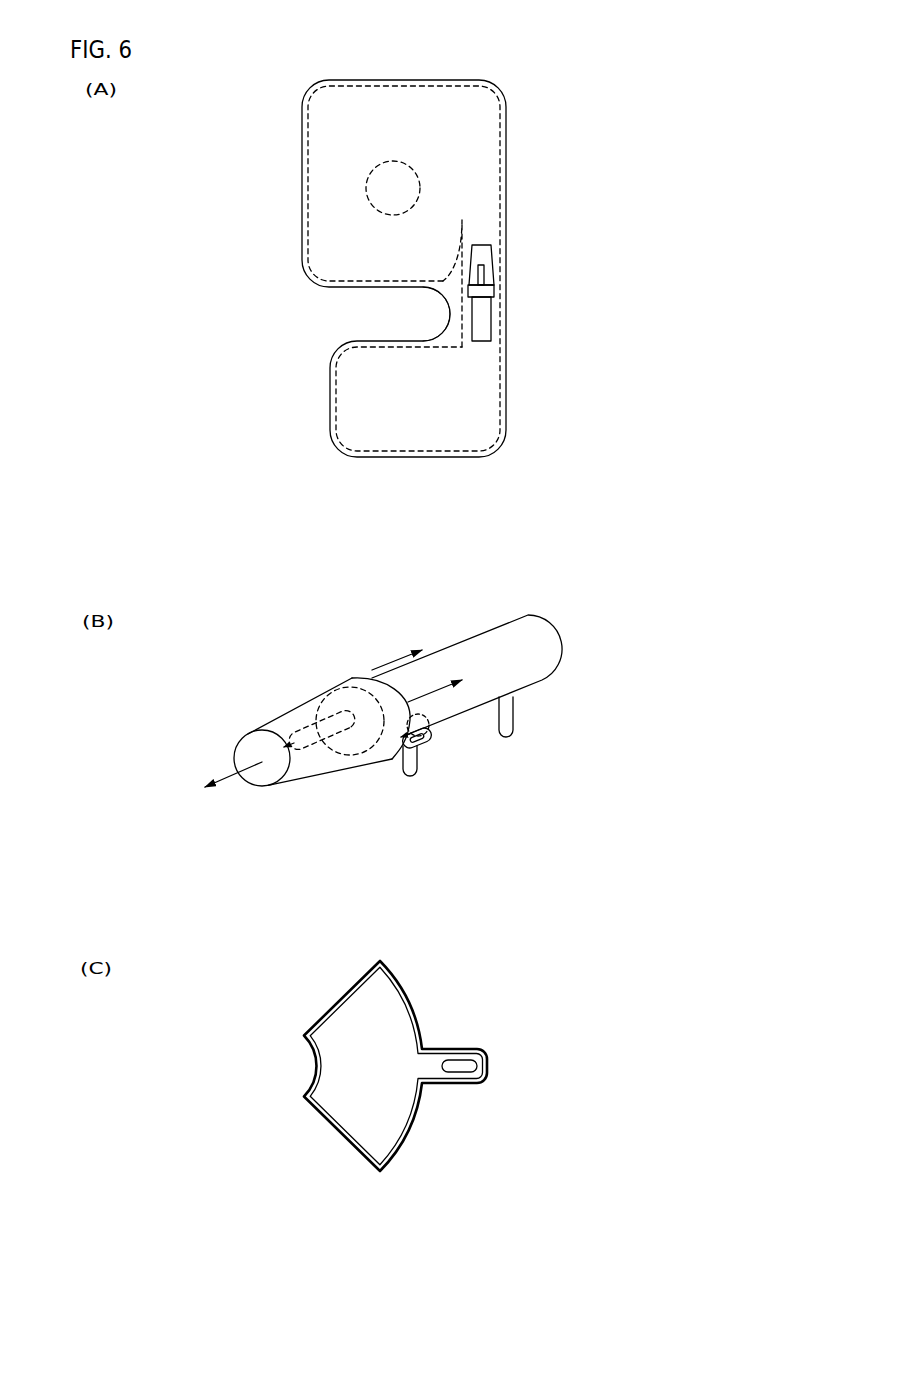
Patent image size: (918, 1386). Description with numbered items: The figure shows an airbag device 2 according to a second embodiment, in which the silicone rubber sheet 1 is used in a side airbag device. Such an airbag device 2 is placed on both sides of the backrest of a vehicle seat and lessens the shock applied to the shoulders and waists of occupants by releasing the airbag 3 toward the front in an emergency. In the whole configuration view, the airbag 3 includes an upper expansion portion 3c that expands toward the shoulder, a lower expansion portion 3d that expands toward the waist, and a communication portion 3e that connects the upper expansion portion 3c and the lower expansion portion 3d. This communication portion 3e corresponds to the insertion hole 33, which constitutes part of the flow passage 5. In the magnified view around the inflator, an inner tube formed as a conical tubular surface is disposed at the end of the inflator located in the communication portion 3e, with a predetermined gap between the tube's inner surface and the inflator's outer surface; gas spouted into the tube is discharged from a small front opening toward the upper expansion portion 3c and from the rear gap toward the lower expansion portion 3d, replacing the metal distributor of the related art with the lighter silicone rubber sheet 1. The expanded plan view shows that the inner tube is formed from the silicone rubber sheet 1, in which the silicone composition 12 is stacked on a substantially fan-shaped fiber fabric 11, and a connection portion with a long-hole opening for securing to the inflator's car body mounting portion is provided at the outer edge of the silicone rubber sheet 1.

The silicone rubber sheet 1 is at (389, 1059).
The airbag device 2 is at (553, 133).
The airbag 3 is at (301, 207).
The upper expansion portion 3c is at (415, 138).
The lower expansion portion 3d is at (413, 405).
The communication portion 3e is at (452, 309).
The insertion hole 33 is at (412, 314).
The flow passage 5 is at (521, 247).
The fiber fabric 11 is at (417, 1009).
The silicone composition 12 is at (384, 1070).